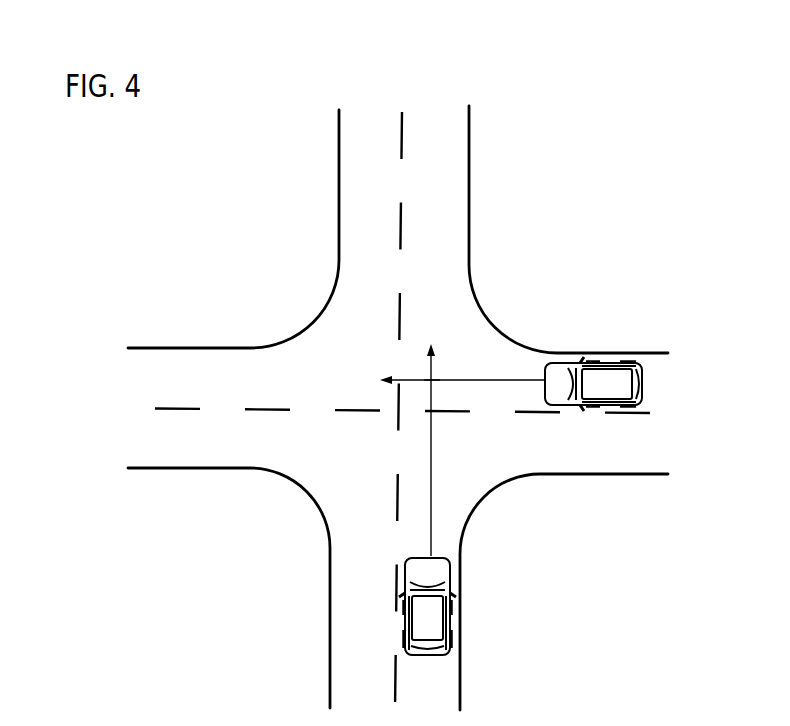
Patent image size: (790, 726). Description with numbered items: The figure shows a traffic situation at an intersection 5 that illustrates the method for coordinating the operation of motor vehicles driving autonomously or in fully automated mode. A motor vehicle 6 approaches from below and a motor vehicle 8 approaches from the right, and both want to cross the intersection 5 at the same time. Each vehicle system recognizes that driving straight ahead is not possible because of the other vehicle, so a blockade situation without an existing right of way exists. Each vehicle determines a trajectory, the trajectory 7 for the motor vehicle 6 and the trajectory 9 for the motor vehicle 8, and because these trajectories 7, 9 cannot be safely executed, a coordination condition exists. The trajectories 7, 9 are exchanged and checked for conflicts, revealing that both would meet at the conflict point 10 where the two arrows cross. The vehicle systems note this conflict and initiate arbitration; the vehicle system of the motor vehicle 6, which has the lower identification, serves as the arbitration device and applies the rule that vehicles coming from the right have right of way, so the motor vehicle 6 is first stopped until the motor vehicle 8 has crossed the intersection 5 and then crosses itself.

The intersection 5 is at (348, 358).
The motor vehicle 6 is at (428, 618).
The trajectory 7 is at (432, 478).
The motor vehicle 8 is at (608, 378).
The trajectory 9 is at (487, 380).
The conflict point 10 is at (433, 378).